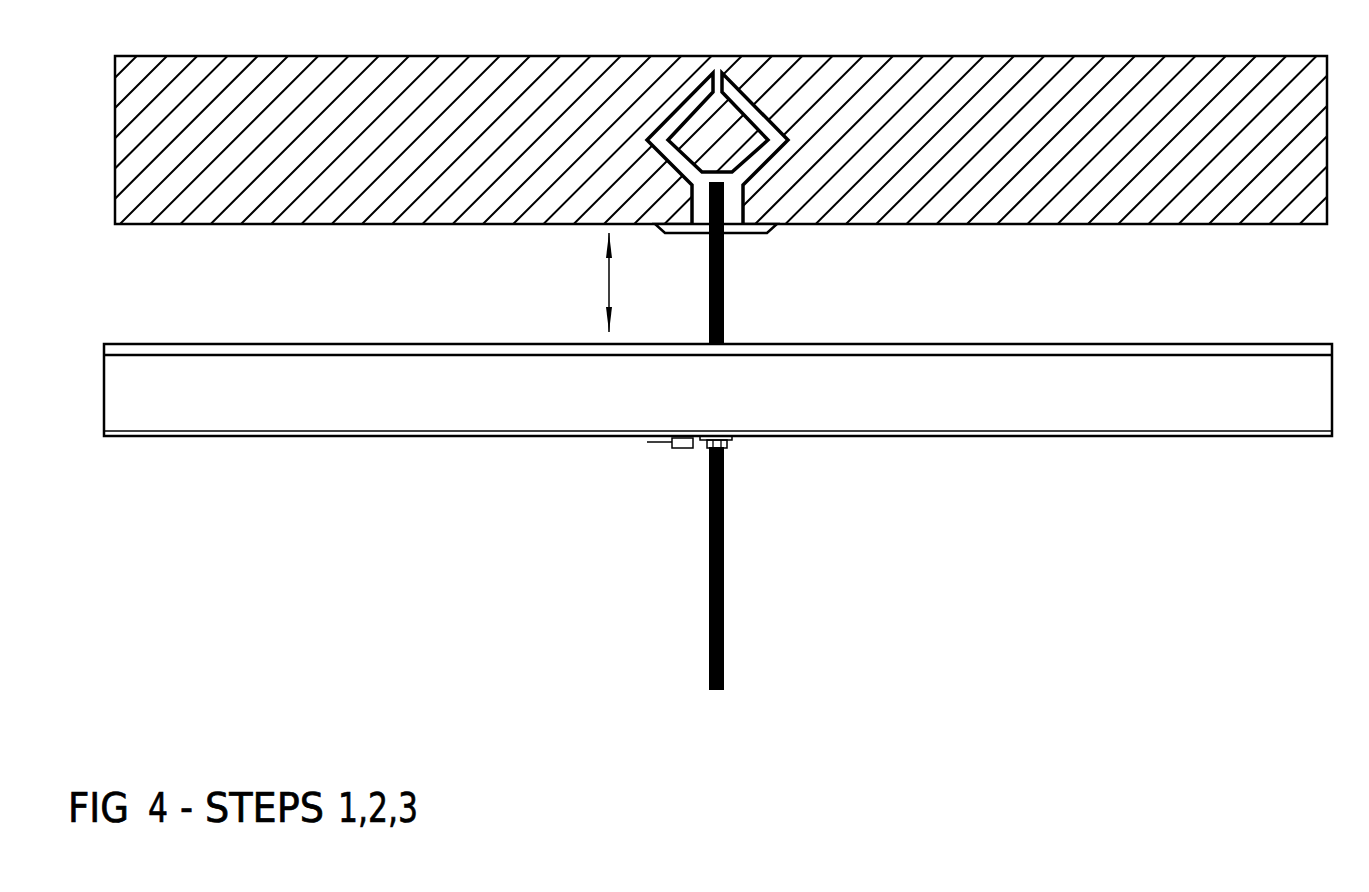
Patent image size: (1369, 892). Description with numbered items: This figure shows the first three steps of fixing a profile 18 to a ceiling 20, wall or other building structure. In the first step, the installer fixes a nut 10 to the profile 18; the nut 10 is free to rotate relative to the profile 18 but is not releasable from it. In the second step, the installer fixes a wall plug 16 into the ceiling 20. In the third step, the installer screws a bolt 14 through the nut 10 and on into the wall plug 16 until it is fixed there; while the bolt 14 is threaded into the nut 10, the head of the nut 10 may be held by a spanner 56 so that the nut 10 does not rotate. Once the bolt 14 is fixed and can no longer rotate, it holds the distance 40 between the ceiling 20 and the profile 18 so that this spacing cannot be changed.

The nut 10 is at (733, 441).
The bolt 14 is at (710, 327).
The wall plug 16 is at (733, 197).
The profile 18 is at (937, 403).
The ceiling 20 is at (1017, 183).
The distance 40 is at (587, 282).
The spanner 56 is at (670, 450).